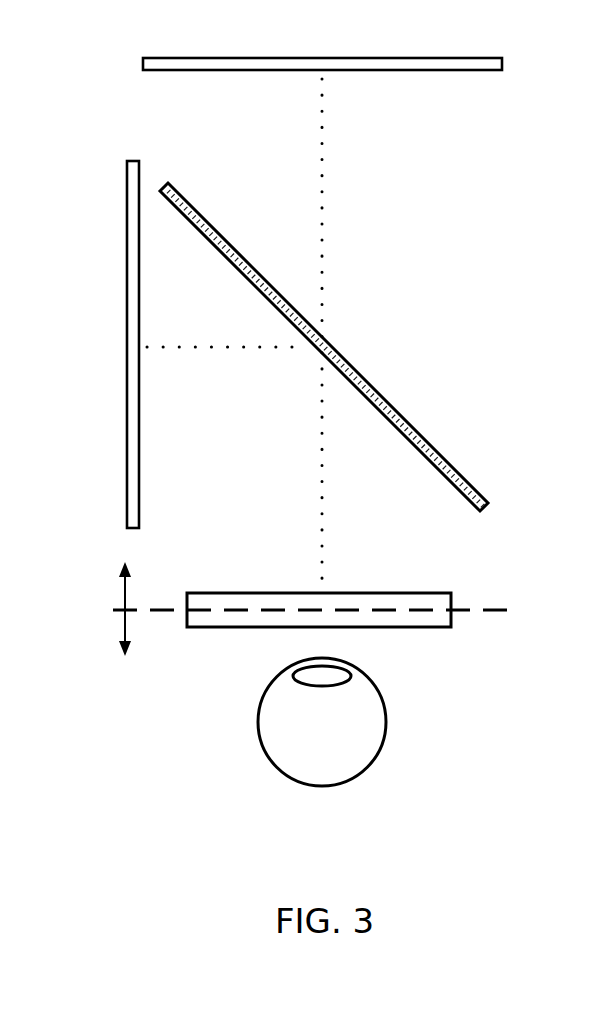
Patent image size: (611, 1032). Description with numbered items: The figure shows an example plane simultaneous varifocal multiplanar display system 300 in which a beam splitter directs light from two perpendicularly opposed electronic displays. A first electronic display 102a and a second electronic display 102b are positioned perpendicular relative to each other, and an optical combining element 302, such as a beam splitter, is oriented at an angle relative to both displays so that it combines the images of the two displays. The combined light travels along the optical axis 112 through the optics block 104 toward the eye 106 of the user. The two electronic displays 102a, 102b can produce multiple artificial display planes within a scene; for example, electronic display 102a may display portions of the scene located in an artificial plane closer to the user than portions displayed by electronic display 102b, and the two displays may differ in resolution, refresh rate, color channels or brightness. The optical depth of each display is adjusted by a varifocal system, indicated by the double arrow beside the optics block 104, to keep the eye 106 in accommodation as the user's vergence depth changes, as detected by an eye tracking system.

The multiplanar display system 300 is at (74, 82).
The electronic display 102a is at (503, 62).
The electronic display 102b is at (127, 528).
The optical combining element 302 is at (488, 502).
The optics block 104 is at (405, 632).
The optical axis 112 is at (513, 610).
The eye 106 is at (260, 738).